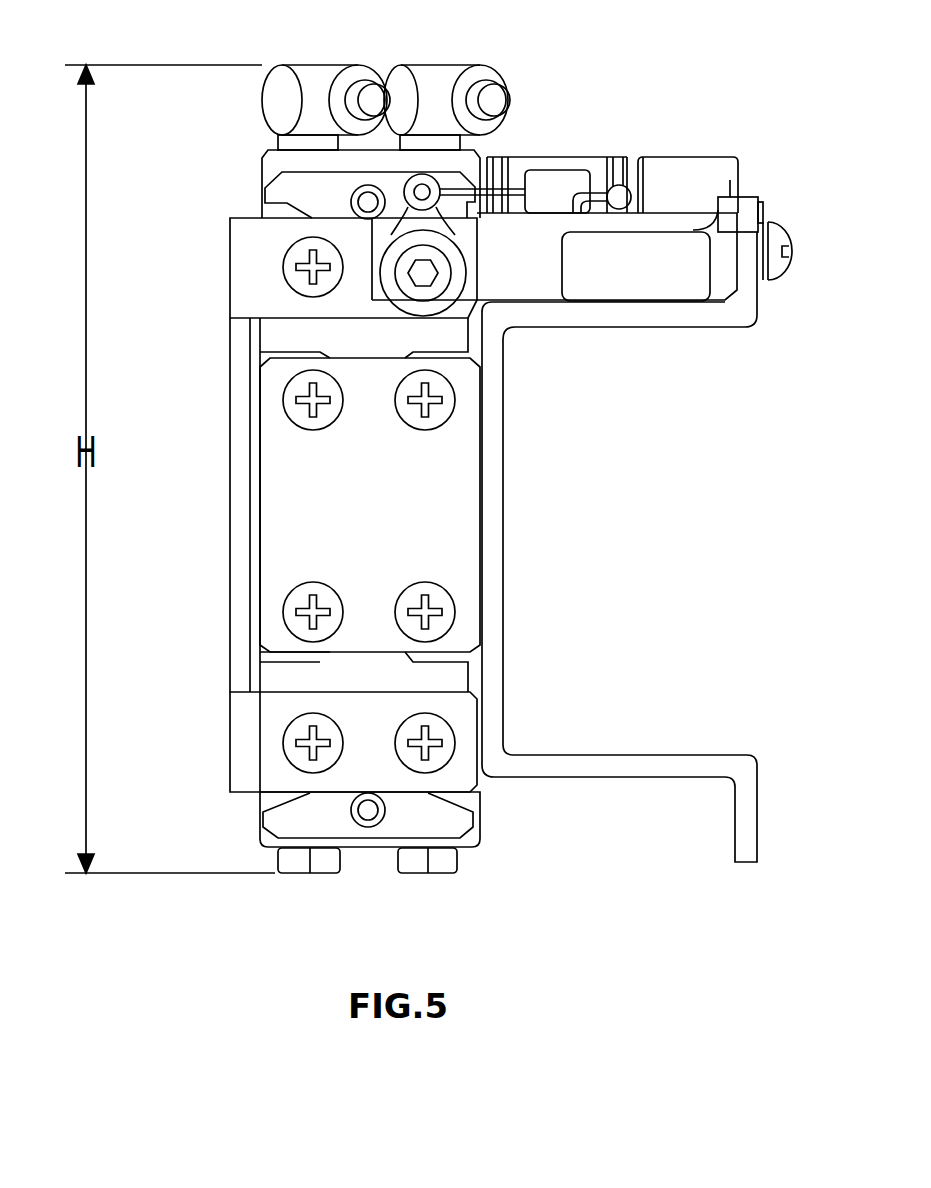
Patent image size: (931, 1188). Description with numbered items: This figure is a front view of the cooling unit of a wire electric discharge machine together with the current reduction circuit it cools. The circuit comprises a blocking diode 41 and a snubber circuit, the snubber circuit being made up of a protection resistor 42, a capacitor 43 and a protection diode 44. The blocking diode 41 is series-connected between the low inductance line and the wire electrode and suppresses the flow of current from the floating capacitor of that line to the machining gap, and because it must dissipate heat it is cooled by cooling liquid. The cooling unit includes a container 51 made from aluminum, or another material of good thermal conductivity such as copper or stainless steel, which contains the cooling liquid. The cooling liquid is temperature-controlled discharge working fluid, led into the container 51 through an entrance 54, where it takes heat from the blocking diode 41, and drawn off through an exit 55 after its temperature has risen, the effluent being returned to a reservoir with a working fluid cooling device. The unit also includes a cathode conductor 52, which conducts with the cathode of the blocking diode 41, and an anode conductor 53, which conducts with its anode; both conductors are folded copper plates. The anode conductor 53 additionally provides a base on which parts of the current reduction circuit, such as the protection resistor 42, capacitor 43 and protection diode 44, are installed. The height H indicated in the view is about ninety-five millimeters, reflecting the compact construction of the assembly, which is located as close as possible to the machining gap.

The blocking diode 41 is at (462, 333).
The protection resistor 42 is at (615, 160).
The capacitor 43 is at (643, 300).
The protection diode 44 is at (557, 177).
The container 51 is at (267, 173).
The cathode conductor 52 is at (237, 267).
The anode conductor 53 is at (473, 512).
The entrance 54 is at (315, 62).
The exit 55 is at (512, 97).